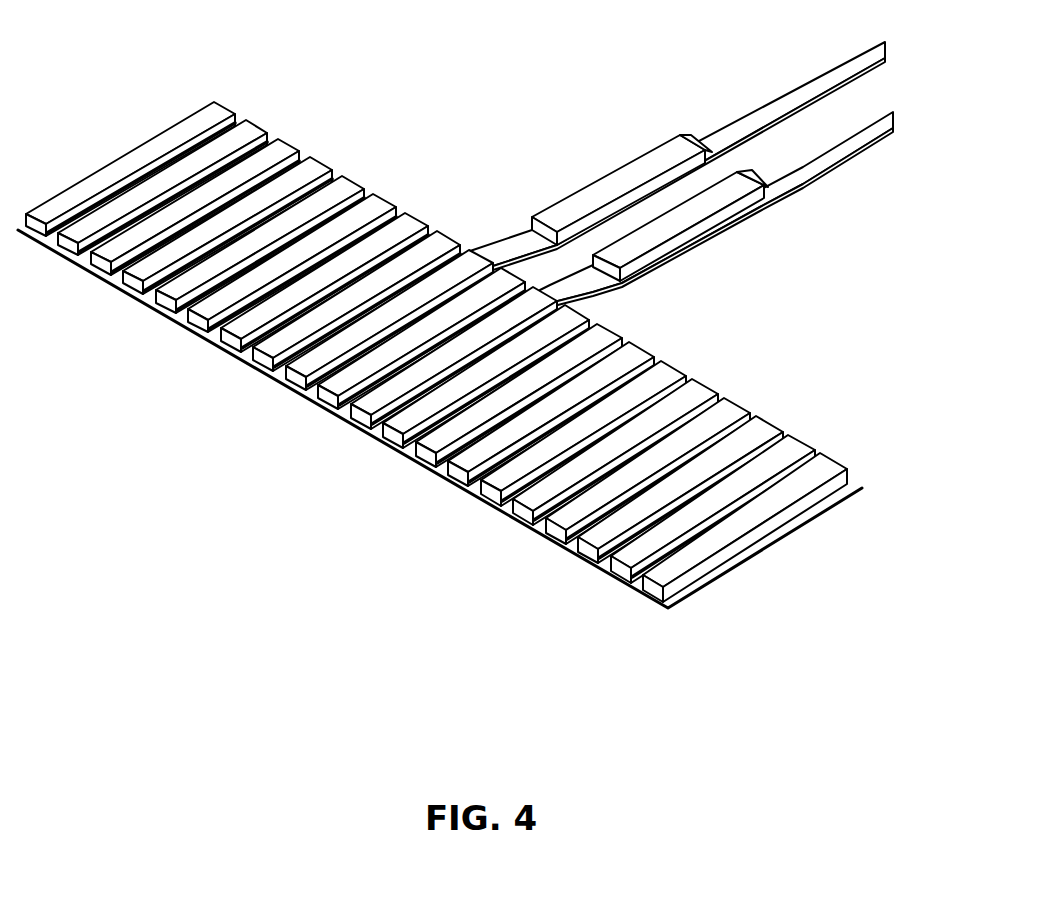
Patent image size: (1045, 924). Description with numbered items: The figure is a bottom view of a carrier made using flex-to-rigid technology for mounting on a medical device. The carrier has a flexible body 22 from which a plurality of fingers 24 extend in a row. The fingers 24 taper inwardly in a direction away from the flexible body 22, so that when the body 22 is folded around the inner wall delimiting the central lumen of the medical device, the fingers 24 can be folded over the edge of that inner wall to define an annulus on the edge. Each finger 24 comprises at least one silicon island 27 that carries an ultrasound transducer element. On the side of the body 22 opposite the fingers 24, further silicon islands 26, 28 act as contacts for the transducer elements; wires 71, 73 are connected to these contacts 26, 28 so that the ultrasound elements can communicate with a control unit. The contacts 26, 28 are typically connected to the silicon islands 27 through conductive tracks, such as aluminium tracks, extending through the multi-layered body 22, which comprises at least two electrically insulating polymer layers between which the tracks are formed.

The flexible body 22 is at (752, 549).
The fingers 24 is at (446, 476).
The silicon island 26 is at (662, 240).
The silicon island 27 is at (64, 204).
The silicon island 28 is at (575, 210).
The wire 71 is at (803, 167).
The wire 73 is at (780, 107).